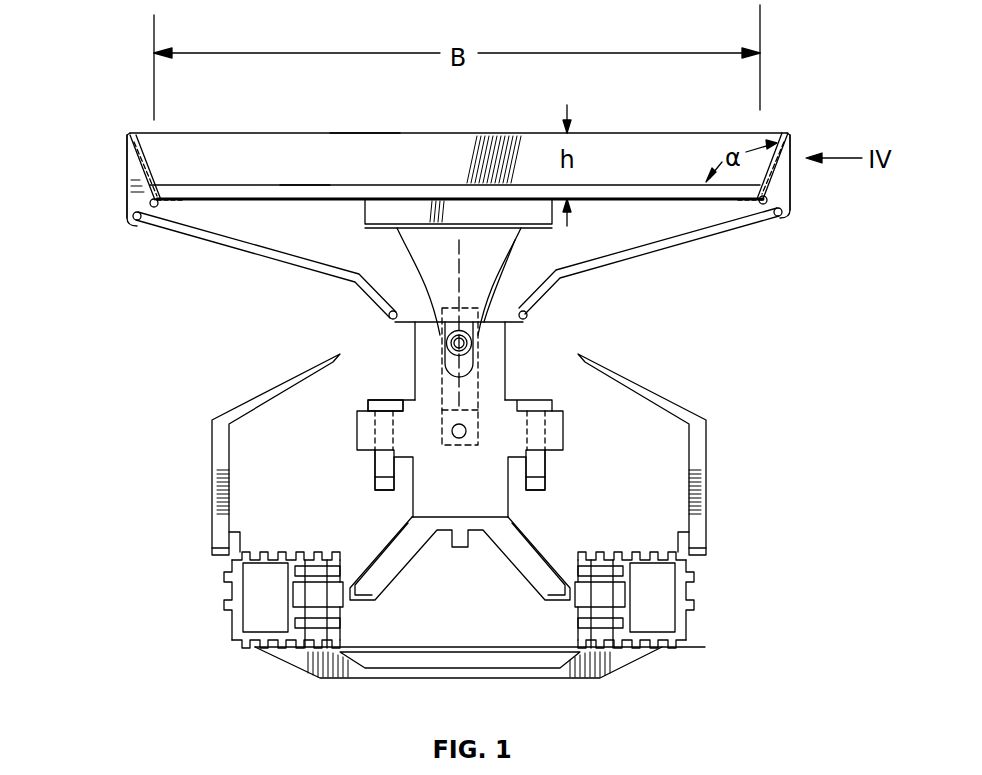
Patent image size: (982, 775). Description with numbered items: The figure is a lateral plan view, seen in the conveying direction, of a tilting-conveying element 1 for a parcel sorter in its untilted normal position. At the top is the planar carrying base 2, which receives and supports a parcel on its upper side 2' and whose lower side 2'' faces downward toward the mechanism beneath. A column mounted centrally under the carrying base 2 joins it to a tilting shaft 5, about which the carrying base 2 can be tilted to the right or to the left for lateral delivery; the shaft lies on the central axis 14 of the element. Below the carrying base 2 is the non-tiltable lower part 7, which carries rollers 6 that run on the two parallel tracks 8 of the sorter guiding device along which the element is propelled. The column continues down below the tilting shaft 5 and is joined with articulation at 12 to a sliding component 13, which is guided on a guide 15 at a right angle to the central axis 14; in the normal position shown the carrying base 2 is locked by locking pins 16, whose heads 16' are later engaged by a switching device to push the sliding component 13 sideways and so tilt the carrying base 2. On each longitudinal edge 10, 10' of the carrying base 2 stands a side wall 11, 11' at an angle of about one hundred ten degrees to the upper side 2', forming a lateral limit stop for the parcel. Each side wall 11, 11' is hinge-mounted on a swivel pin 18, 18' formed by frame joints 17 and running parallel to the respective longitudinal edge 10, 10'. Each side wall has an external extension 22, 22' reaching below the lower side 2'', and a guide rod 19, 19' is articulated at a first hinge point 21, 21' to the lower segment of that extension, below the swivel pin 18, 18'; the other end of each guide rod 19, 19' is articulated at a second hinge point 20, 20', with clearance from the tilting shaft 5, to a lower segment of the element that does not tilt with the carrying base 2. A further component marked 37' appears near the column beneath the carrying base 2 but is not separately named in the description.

The tilting-conveying element 1 is at (672, 330).
The carrying base 2 is at (458, 166).
The upper side 2' is at (365, 160).
The lower side 2'' is at (305, 172).
The tilting shaft 5 is at (477, 345).
The rollers 6 is at (312, 585).
The lower part 7 is at (582, 506).
The tracks 8 is at (231, 598).
The longitudinal edge 10 is at (752, 143).
The longitudinal edge 10' is at (184, 167).
The side wall 11 is at (802, 152).
The side wall 11' is at (90, 179).
The articulated joint 12 is at (456, 440).
The sliding component 13 is at (564, 428).
The central axis 14 is at (443, 258).
The guide 15 is at (413, 396).
The locking pins 16 is at (459, 470).
The head 16' is at (349, 409).
The frame joints 17 is at (176, 204).
The swivel pin 18 is at (816, 209).
The swivel pin 18' is at (112, 221).
The guide rod 19 is at (649, 261).
The guide rod 19' is at (266, 265).
The second hinge point 20 is at (560, 313).
The second hinge point 20' is at (350, 316).
The first hinge point 21 is at (809, 231).
The first hinge point 21' is at (108, 249).
The external extension 22 is at (822, 172).
The external extension 22' is at (97, 176).
The connecting piece 37' is at (520, 279).